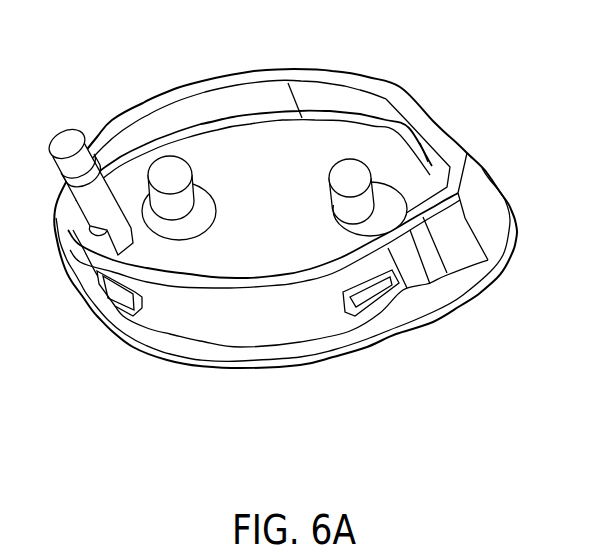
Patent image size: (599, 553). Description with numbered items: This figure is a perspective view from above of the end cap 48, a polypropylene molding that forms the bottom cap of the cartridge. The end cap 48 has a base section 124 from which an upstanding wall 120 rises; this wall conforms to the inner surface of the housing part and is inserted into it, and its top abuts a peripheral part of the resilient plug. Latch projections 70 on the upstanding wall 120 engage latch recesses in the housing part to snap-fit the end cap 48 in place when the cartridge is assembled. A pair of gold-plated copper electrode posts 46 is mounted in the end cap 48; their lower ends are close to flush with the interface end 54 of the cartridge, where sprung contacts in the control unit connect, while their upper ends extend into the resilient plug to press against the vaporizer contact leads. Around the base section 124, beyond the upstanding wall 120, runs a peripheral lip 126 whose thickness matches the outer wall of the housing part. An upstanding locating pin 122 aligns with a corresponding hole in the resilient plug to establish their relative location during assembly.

The end cap 48 is at (295, 229).
The upstanding wall 120 is at (228, 79).
The upstanding locating pin 122 is at (62, 140).
The electrode posts 46 is at (338, 182).
The base section 124 is at (287, 250).
The peripheral lip 126 is at (492, 183).
The interface end 54 is at (440, 315).
The latch projections 70 is at (118, 306).